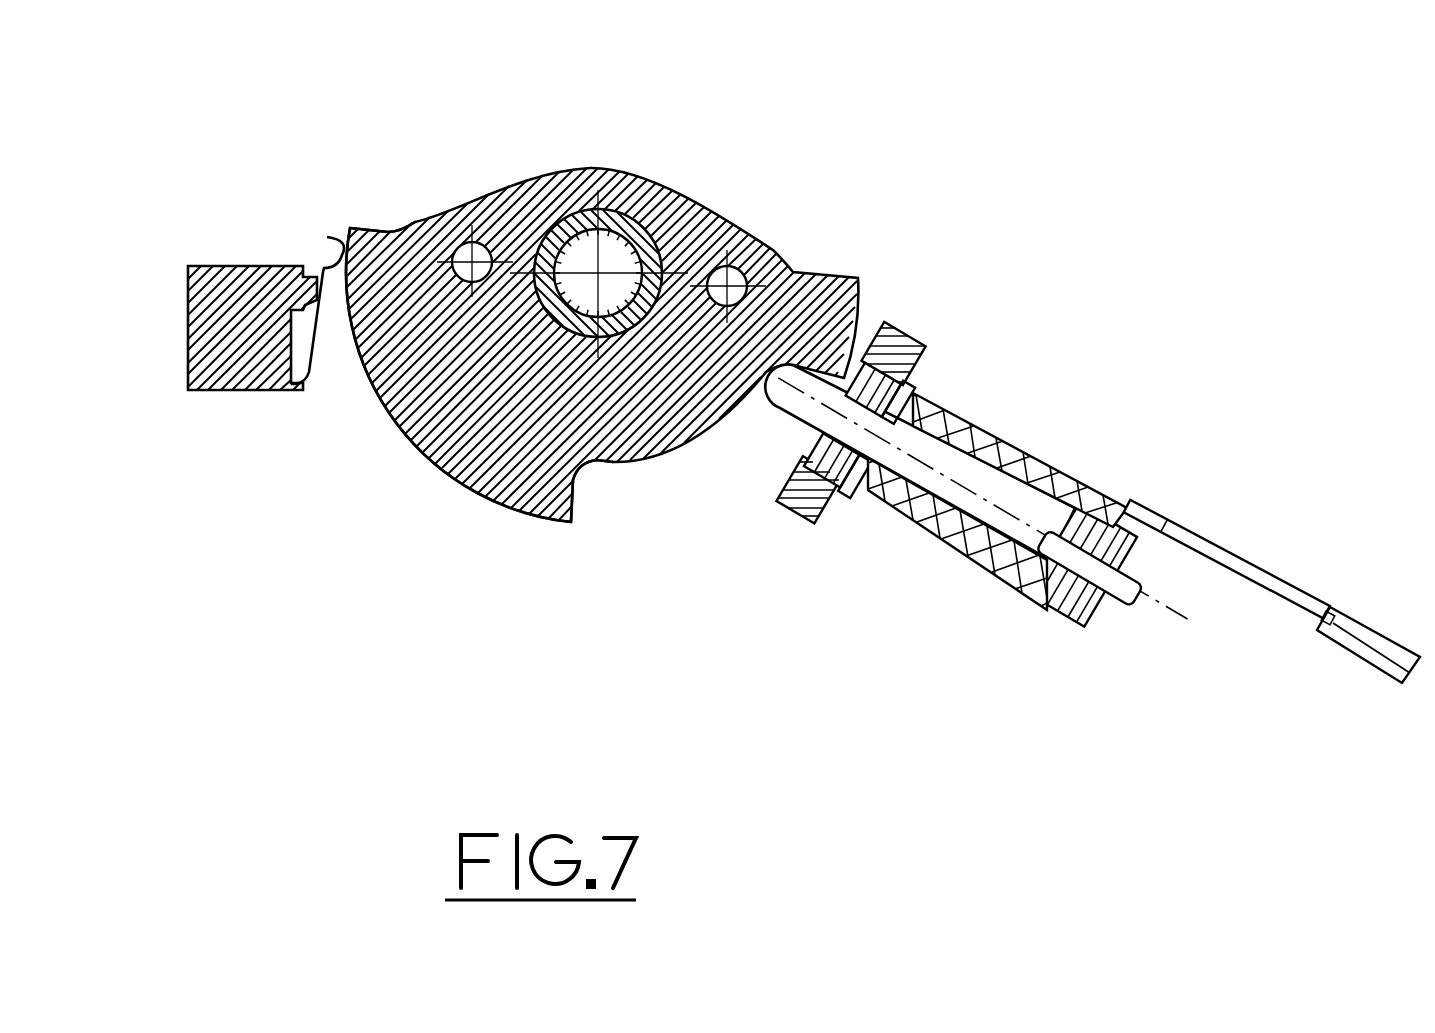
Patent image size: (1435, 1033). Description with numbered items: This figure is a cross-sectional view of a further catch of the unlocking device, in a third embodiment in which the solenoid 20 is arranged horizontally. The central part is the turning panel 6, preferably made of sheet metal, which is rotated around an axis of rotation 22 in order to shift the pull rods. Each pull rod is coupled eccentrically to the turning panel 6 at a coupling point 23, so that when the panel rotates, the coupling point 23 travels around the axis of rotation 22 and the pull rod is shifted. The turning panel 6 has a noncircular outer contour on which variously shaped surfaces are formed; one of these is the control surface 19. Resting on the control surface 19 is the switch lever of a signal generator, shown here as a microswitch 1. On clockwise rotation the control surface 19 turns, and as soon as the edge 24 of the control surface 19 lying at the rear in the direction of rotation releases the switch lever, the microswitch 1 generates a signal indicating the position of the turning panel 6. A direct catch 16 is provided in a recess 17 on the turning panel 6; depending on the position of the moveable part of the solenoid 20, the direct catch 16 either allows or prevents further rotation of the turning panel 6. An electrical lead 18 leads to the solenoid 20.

The microswitch 1 is at (233, 348).
The turning panel 6 is at (532, 477).
The direct catch 16 is at (795, 407).
The recess 17 is at (613, 462).
The electrical lead 18 is at (1233, 567).
The control surface 19 is at (430, 465).
The solenoid 20 is at (1030, 465).
The axis of rotation 22 is at (598, 273).
The coupling point 23 is at (740, 277).
The edge of the control surface 24 is at (385, 232).